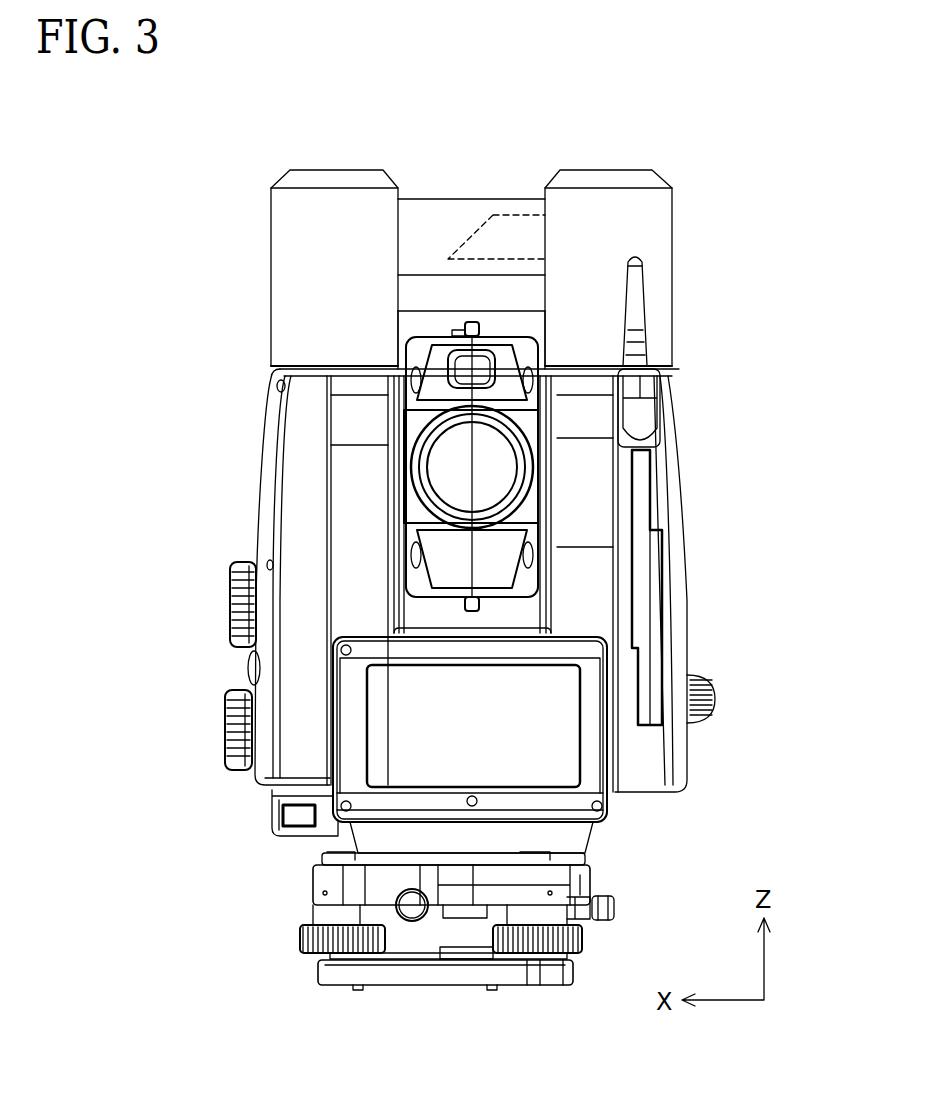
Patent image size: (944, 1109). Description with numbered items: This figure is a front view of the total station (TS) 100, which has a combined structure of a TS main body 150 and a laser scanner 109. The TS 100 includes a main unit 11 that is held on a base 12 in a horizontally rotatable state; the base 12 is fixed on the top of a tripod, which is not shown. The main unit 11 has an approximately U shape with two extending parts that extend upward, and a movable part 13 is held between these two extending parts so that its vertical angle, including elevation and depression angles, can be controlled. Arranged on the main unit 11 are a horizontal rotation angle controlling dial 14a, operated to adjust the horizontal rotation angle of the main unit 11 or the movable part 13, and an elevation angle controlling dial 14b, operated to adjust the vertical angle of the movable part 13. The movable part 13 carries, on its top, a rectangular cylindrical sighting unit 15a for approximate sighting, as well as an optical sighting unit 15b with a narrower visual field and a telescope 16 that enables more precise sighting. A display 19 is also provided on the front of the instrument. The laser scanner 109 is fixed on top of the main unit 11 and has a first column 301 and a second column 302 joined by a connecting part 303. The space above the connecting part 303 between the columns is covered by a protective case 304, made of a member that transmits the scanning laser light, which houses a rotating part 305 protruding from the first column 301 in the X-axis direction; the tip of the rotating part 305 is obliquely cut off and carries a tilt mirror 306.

The total station (TS) 100 is at (798, 153).
The laser scanner 109 is at (271, 240).
The first column 301 is at (610, 212).
The second column 302 is at (300, 205).
The connecting part 303 is at (418, 290).
The protective case 304 is at (430, 199).
The rotating part 305 is at (524, 232).
The tilt mirror 306 is at (470, 240).
The main unit 11 is at (298, 478).
The base 12 is at (337, 882).
The movable part 13 is at (490, 570).
The horizontal rotation angle controlling dial 14a is at (243, 590).
The elevation angle controlling dial 14b is at (238, 720).
The sighting unit 15a is at (465, 328).
The optical sighting unit 15b is at (495, 355).
The telescope 16 is at (490, 457).
The display unit 19 is at (545, 768).
The TS main body 150 is at (688, 500).